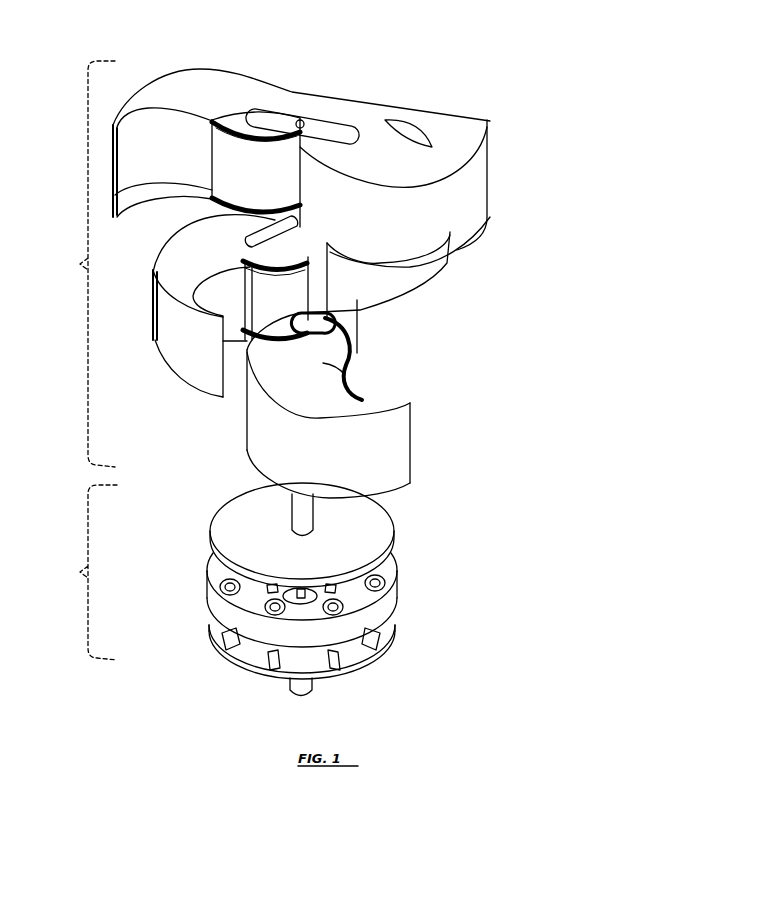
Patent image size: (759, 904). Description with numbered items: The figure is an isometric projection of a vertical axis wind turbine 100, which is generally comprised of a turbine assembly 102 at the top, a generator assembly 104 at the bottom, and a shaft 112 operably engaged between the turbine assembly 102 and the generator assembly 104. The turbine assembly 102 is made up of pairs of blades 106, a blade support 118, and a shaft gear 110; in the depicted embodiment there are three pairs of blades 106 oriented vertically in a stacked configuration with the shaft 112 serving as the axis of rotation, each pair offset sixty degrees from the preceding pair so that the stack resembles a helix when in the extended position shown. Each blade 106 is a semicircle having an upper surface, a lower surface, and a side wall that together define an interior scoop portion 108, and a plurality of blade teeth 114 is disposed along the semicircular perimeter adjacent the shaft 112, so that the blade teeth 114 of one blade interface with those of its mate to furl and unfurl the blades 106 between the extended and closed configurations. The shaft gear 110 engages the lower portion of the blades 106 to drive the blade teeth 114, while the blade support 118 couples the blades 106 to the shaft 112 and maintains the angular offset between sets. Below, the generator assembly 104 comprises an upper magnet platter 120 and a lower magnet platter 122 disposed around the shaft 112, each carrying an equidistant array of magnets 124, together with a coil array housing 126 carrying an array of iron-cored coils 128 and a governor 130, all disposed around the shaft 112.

The vertical axis wind turbine 100 is at (608, 73).
The turbine assembly 102 is at (80, 264).
The generator assembly 104 is at (80, 573).
The blades 106 is at (400, 128).
The scoop portion 108 is at (193, 133).
The shaft gear 110 is at (313, 210).
The shaft 112 is at (317, 517).
The blade teeth 114 is at (290, 130).
The blade support 118 is at (357, 343).
The upper magnet platter 120 is at (372, 553).
The lower magnet platter 122 is at (340, 678).
The magnets 124 is at (352, 660).
The coil array housing 126 is at (390, 624).
The coils 128 is at (350, 600).
The governor 130 is at (300, 600).